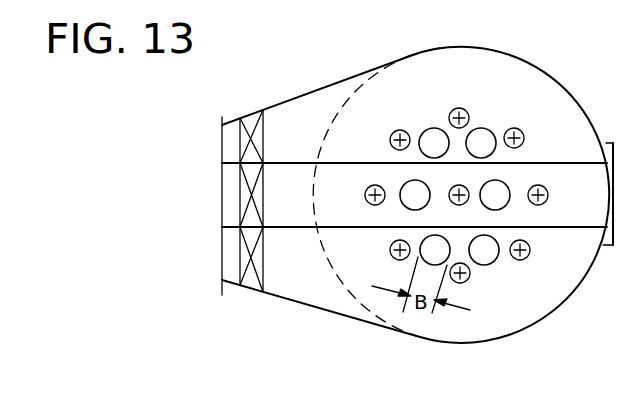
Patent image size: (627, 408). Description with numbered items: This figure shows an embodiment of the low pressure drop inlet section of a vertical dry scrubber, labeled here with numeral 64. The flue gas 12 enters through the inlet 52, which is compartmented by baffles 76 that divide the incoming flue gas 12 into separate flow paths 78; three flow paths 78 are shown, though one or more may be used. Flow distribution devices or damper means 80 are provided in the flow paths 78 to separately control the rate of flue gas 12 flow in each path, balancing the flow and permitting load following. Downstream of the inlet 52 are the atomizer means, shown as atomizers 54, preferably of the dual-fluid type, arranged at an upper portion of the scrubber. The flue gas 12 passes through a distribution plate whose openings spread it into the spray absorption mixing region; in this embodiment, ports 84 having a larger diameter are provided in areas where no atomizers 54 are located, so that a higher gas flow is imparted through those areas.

The flue gas 12 is at (204, 197).
The inlet 52 is at (311, 302).
The atomizers 54 is at (530, 250).
The face plate 64 is at (400, 70).
The baffles 76 is at (566, 227).
The flow paths 78 is at (307, 147).
The damper means 80 is at (263, 160).
The ports 84 is at (432, 130).